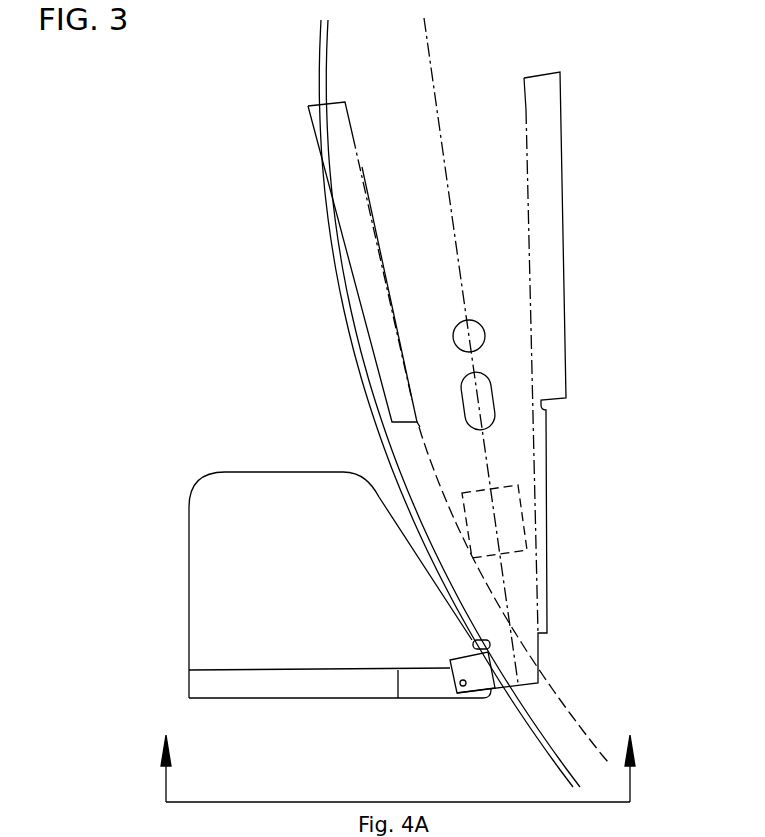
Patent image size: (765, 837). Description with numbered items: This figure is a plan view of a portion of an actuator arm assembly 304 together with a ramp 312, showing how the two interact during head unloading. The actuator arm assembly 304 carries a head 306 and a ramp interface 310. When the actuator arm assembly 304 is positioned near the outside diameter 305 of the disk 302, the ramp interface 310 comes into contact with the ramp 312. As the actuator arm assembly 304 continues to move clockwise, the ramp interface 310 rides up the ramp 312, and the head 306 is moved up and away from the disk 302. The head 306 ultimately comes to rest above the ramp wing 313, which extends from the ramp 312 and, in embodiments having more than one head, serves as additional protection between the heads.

The disk 302 is at (590, 710).
The actuator arm assembly 304 is at (497, 460).
The outside diameter 305 is at (566, 780).
The head 306 is at (462, 525).
The ramp interface 310 is at (495, 692).
The ramp 312 is at (275, 693).
The ramp wing 313 is at (198, 603).